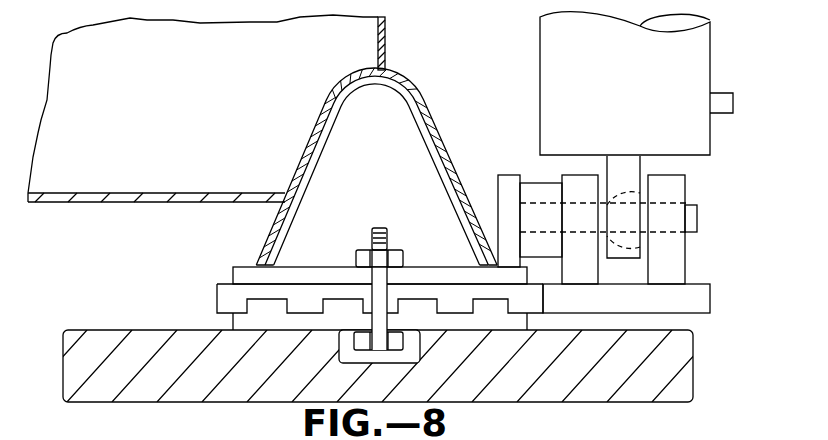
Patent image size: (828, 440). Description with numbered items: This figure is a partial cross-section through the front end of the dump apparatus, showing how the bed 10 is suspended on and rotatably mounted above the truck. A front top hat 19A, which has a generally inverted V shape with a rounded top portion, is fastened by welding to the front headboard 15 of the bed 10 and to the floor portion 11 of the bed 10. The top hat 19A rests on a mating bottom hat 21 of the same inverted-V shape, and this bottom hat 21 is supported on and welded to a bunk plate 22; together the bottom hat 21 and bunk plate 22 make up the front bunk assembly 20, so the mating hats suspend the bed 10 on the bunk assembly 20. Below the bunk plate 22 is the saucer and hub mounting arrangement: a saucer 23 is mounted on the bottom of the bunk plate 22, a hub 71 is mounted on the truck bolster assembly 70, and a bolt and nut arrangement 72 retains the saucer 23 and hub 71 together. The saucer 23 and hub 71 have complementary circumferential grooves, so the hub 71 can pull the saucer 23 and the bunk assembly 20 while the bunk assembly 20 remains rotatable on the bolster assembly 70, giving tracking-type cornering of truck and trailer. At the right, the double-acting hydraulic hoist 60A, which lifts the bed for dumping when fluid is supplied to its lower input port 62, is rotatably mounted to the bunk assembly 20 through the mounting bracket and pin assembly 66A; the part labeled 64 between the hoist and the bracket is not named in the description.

The bed 10 is at (167, 82).
The floor portion 11 is at (155, 193).
The front headboard 15 is at (378, 47).
The front top hat 19A is at (332, 115).
The front bunk assembly 20 is at (376, 166).
The bottom hat 21 is at (335, 137).
The bunk plate 22 is at (243, 268).
The saucer 23 is at (222, 303).
The hoisting means 60A is at (697, 48).
The lower input port 62 is at (720, 100).
The stem 64 is at (625, 215).
The mounting bracket and pin assembly 66A is at (669, 288).
The truck bolster assembly 70 is at (160, 340).
The hub 71 is at (288, 323).
The bolt and nut arrangement 72 is at (410, 374).